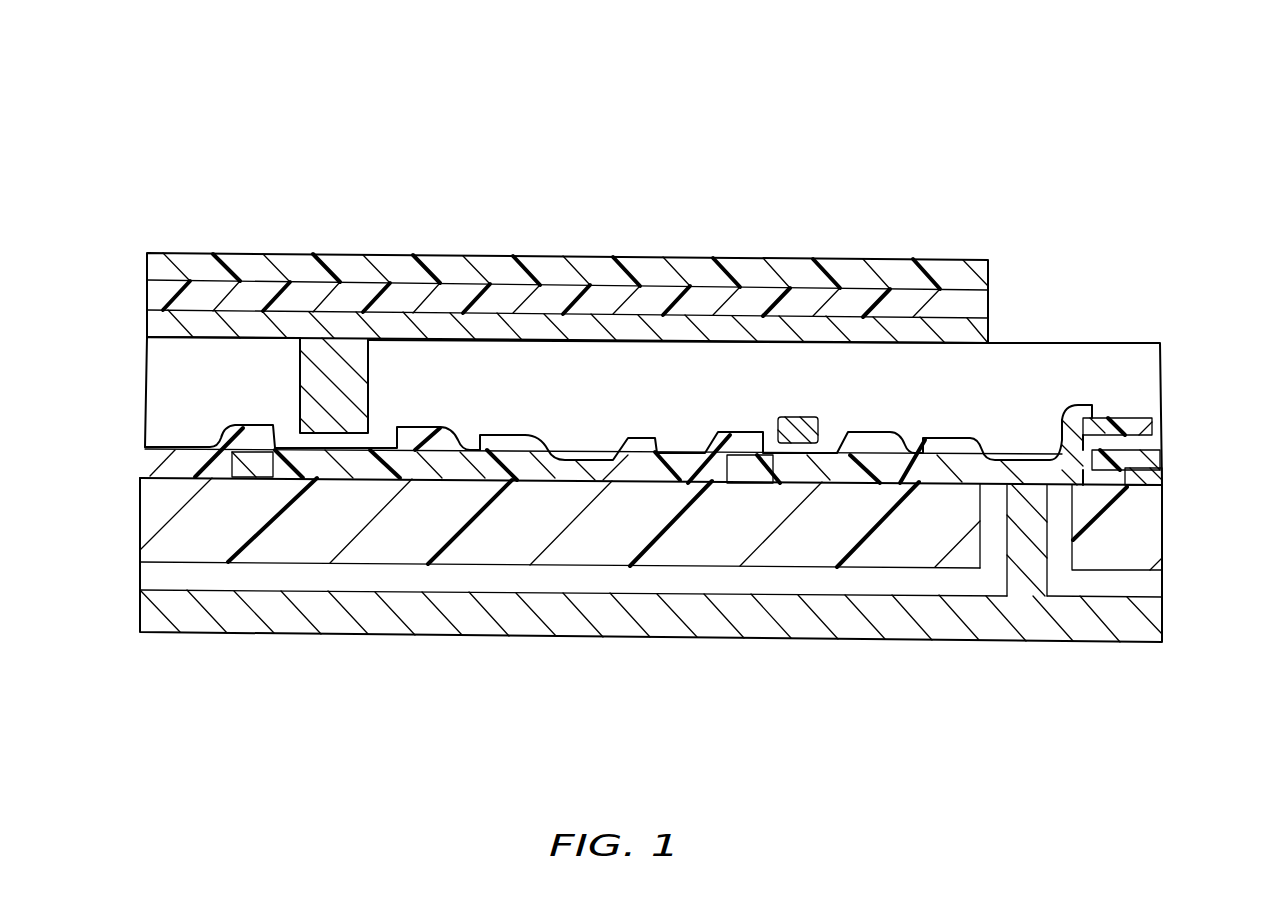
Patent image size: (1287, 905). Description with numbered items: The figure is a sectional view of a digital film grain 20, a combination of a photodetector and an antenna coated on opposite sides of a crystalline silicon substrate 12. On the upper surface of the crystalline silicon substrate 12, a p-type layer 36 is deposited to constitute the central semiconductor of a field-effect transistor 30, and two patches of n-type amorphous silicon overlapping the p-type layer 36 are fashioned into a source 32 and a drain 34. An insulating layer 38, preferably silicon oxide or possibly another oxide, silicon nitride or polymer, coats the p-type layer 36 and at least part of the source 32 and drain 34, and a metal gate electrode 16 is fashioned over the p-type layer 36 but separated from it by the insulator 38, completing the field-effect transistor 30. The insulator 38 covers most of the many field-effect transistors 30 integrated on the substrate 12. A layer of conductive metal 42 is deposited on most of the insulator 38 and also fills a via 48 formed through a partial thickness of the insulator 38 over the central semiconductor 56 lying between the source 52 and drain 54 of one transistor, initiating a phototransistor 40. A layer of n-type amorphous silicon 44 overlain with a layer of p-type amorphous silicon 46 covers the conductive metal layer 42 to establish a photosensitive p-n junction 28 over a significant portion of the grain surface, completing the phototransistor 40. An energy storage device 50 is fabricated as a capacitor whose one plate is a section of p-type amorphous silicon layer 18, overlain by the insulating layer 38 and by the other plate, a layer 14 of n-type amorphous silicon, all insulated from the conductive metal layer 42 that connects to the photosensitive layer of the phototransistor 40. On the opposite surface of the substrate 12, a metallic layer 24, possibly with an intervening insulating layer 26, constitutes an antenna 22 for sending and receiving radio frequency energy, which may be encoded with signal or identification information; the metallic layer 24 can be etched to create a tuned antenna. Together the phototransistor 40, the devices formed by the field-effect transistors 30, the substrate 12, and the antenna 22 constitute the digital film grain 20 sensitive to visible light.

The crystalline silicon substrate 12 is at (610, 550).
The layer of n-type amorphous silicon 14 is at (1128, 420).
The gate electrode 16 is at (800, 426).
The p-type amorphous silicon layer 18 is at (1165, 478).
The digital film grain 20 is at (473, 168).
The antenna 22 is at (1057, 645).
The metallic layer 24 is at (840, 625).
The intervening insulating layer 26 is at (790, 585).
The photosensitive p-n junction 28 is at (624, 255).
The field-effect transistor 30 is at (825, 458).
The source 32 is at (905, 460).
The drain 34 is at (685, 462).
The p-type layer 36 is at (748, 480).
The insulating layer 38 is at (675, 385).
The phototransistor 40 is at (290, 440).
The layer of conductive metal 42 is at (490, 325).
The layer of n-type amorphous silicon 44 is at (555, 298).
The layer of p-type amorphous silicon 46 is at (630, 270).
The via 48 is at (355, 392).
The energy storage device 50 is at (1118, 446).
The source 52 is at (466, 458).
The drain 54 is at (148, 462).
The central semiconductor 56 is at (355, 470).